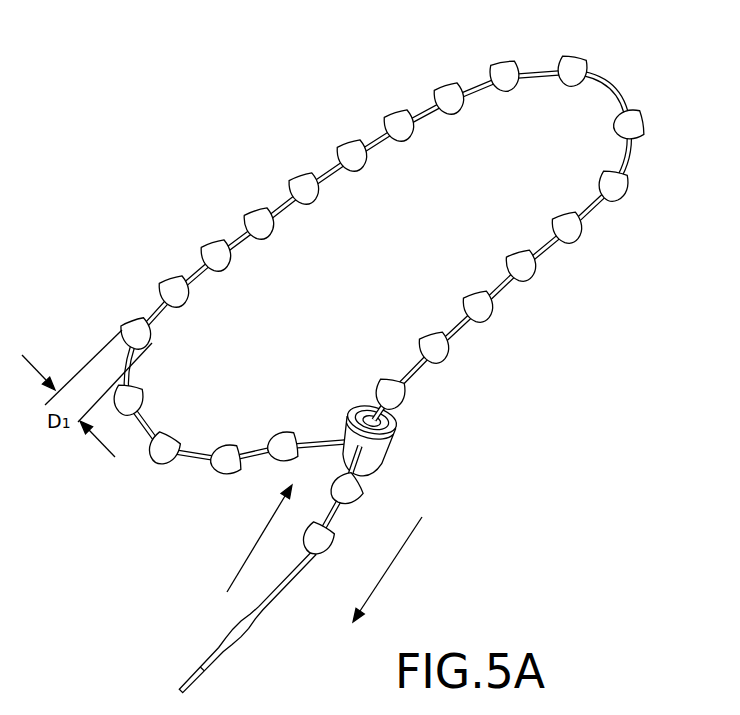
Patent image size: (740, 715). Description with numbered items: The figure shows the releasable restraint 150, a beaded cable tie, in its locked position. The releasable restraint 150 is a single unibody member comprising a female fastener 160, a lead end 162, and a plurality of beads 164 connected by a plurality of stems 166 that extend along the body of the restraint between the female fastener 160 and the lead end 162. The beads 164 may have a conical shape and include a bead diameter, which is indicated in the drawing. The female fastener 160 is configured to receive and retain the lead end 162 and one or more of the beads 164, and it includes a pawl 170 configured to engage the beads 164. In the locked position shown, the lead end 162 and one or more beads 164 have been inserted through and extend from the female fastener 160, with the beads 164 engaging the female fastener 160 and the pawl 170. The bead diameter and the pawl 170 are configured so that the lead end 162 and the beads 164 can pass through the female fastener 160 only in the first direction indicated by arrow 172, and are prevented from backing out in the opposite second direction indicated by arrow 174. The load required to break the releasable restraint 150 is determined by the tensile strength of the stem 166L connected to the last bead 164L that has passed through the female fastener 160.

The releasable restraint 150 is at (658, 90).
The female fastener 160 is at (332, 426).
The lead end 162 is at (203, 673).
The beads 164 is at (293, 174).
The last bead 164L is at (348, 504).
The stems 166 is at (475, 84).
The stem connected to the last bead 166L is at (406, 414).
The pawl 170 is at (365, 449).
The arrow 172 is at (398, 558).
The arrow 174 is at (238, 546).